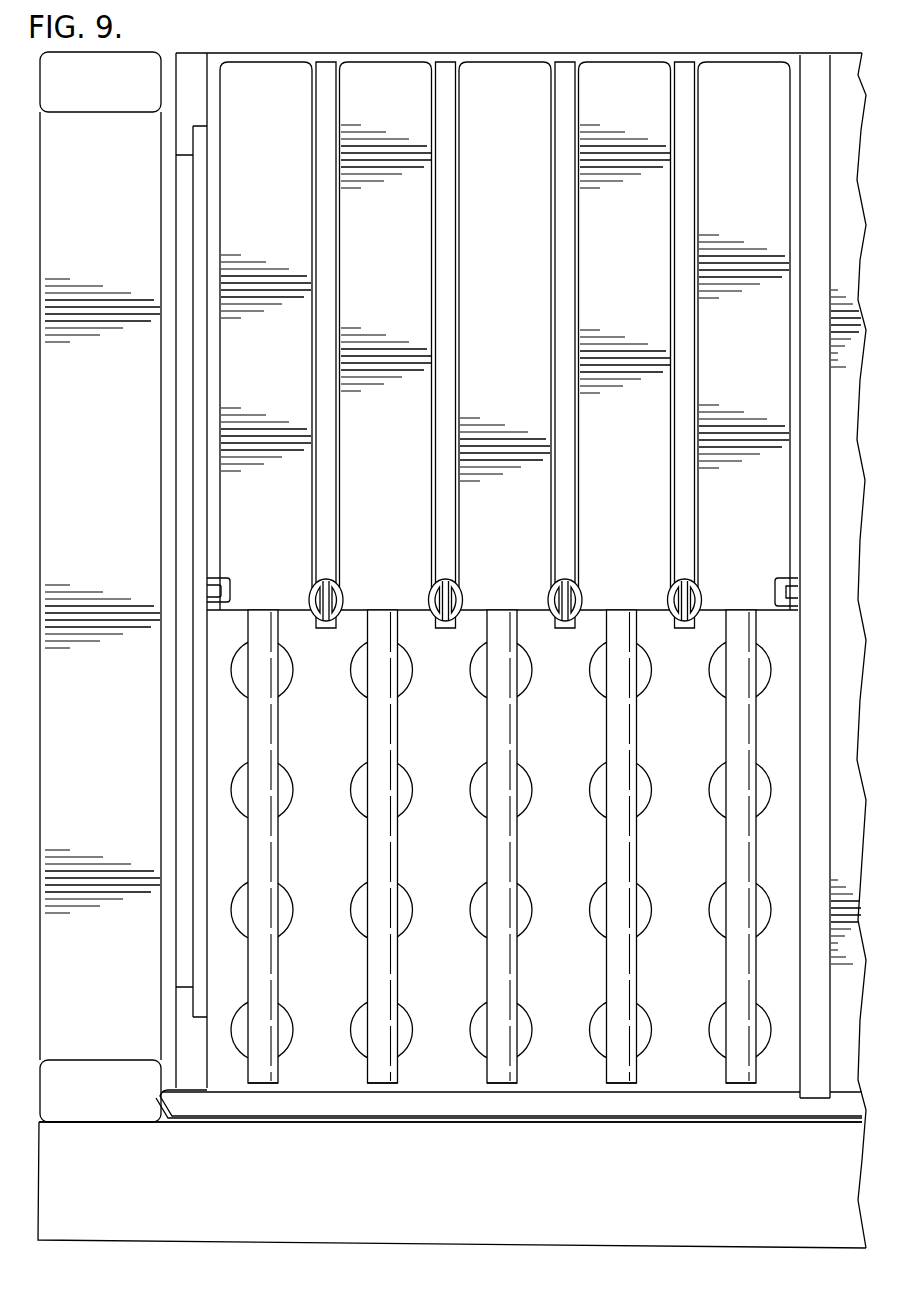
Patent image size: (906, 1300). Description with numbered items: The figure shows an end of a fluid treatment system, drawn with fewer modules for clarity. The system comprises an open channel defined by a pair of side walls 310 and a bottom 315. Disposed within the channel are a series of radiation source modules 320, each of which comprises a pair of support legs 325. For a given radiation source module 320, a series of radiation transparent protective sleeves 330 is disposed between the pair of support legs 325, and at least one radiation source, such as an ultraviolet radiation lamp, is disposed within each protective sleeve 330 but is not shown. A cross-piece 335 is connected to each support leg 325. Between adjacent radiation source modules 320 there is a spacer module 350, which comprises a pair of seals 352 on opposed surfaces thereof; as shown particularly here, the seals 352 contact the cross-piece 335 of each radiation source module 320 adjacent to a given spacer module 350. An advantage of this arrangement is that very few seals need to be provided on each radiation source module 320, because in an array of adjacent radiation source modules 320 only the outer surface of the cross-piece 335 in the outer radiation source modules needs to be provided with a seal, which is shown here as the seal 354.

The side wall 310 is at (116, 817).
The bottom 315 is at (511, 1106).
The radiation source module 320 is at (238, 714).
The support leg 325 is at (735, 1080).
The radiation transparent protective sleeve 330 is at (237, 1023).
The cross-piece 335 is at (246, 212).
The spacer module 350 is at (683, 80).
The seal 352 is at (306, 600).
The seal 354 is at (788, 578).